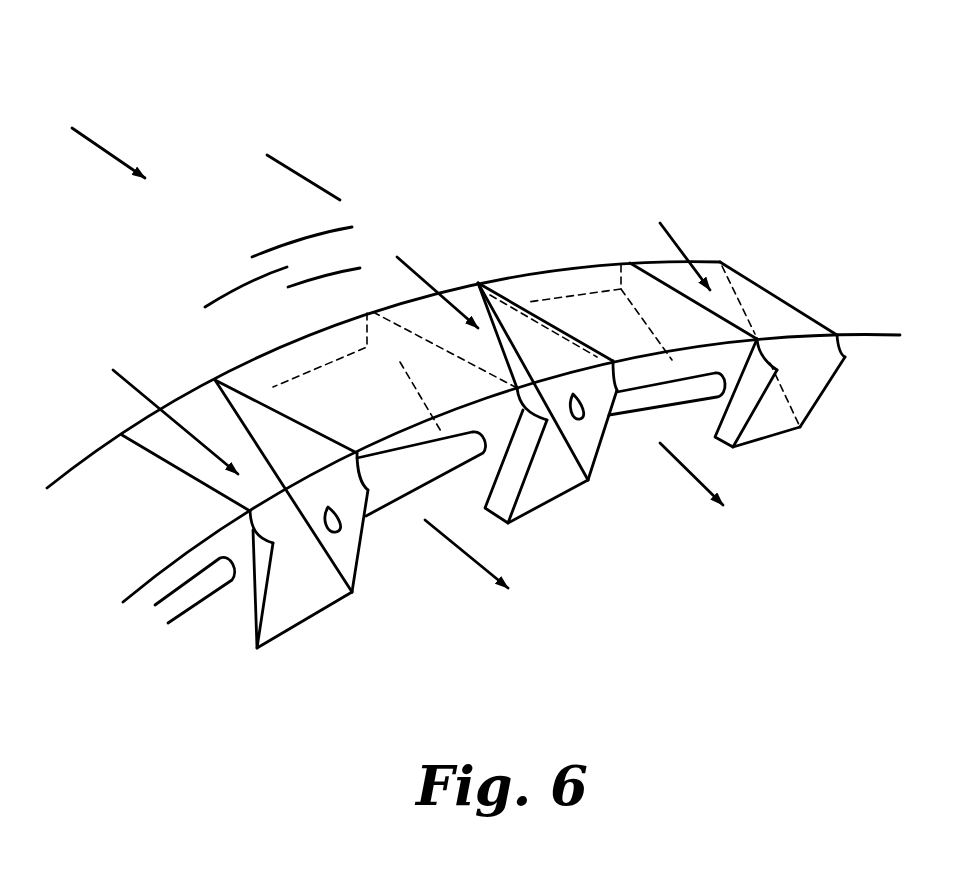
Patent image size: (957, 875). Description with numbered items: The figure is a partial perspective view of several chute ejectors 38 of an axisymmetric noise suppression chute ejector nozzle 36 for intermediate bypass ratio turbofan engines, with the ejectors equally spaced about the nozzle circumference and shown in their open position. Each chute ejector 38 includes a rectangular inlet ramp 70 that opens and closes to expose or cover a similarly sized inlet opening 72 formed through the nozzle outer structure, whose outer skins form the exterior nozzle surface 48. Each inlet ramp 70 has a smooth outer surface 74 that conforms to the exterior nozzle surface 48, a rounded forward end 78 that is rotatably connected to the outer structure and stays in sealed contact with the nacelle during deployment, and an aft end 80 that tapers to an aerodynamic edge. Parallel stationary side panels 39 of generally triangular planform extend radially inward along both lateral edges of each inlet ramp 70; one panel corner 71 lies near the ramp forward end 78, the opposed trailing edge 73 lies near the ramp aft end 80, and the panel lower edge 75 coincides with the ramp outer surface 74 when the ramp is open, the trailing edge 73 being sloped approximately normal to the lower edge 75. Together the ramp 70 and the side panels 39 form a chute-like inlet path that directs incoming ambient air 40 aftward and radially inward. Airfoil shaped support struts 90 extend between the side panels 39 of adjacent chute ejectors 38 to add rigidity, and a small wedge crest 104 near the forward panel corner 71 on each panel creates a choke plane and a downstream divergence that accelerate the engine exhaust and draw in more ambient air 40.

The axisymmetric noise suppression chute ejector nozzle 36 is at (698, 99).
The chute ejector 38 is at (290, 655).
The stationary side panel 39 is at (283, 443).
The ambient air 40 is at (103, 150).
The exterior nozzle surface 48 is at (280, 190).
The inlet ramp 70 is at (212, 412).
The panel corner 71 is at (643, 283).
The inlet opening 72 is at (163, 458).
The panel trailing edge 73 is at (350, 543).
The ramp outer surface 74 is at (312, 586).
The panel lower edge 75 is at (437, 433).
The ramp forward end 78 is at (184, 393).
The ramp aft end 80 is at (317, 600).
The support strut 90 is at (188, 598).
The wedge crest 104 is at (238, 545).